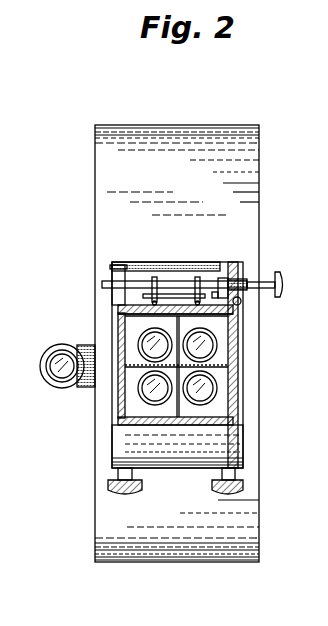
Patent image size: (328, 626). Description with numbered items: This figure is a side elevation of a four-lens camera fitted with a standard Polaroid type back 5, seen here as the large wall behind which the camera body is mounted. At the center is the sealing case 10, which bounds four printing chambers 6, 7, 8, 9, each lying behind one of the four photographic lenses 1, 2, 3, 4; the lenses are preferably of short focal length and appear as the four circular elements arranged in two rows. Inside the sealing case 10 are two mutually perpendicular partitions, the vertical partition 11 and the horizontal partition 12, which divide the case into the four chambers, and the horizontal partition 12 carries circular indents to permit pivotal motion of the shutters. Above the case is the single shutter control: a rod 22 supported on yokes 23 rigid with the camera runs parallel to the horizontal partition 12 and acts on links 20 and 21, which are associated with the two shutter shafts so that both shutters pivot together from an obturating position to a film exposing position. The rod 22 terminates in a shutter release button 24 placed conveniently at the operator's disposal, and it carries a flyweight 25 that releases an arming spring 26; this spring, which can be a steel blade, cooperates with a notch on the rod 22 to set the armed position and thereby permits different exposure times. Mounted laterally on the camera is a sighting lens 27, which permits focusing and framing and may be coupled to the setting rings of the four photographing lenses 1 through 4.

The photographic lens 1 is at (233, 361).
The photographic lens 2 is at (222, 413).
The photographic lens 3 is at (137, 412).
The photographic lens 4 is at (127, 338).
The Polaroid type back 5 is at (108, 163).
The printing chamber 6 is at (208, 348).
The printing chamber 7 is at (207, 398).
The printing chamber 8 is at (167, 410).
The printing chamber 9 is at (122, 322).
The sealing case 10 is at (118, 311).
The vertical partition 11 is at (170, 411).
The horizontal partition 12 is at (135, 392).
The link 20 is at (198, 283).
The link 21 is at (152, 297).
The rod 22 is at (178, 292).
The yoke 23 is at (117, 278).
The shutter release button 24 is at (282, 272).
The flyweight 25 is at (227, 277).
The arming spring 26 is at (240, 310).
The sighting lens 27 is at (50, 368).